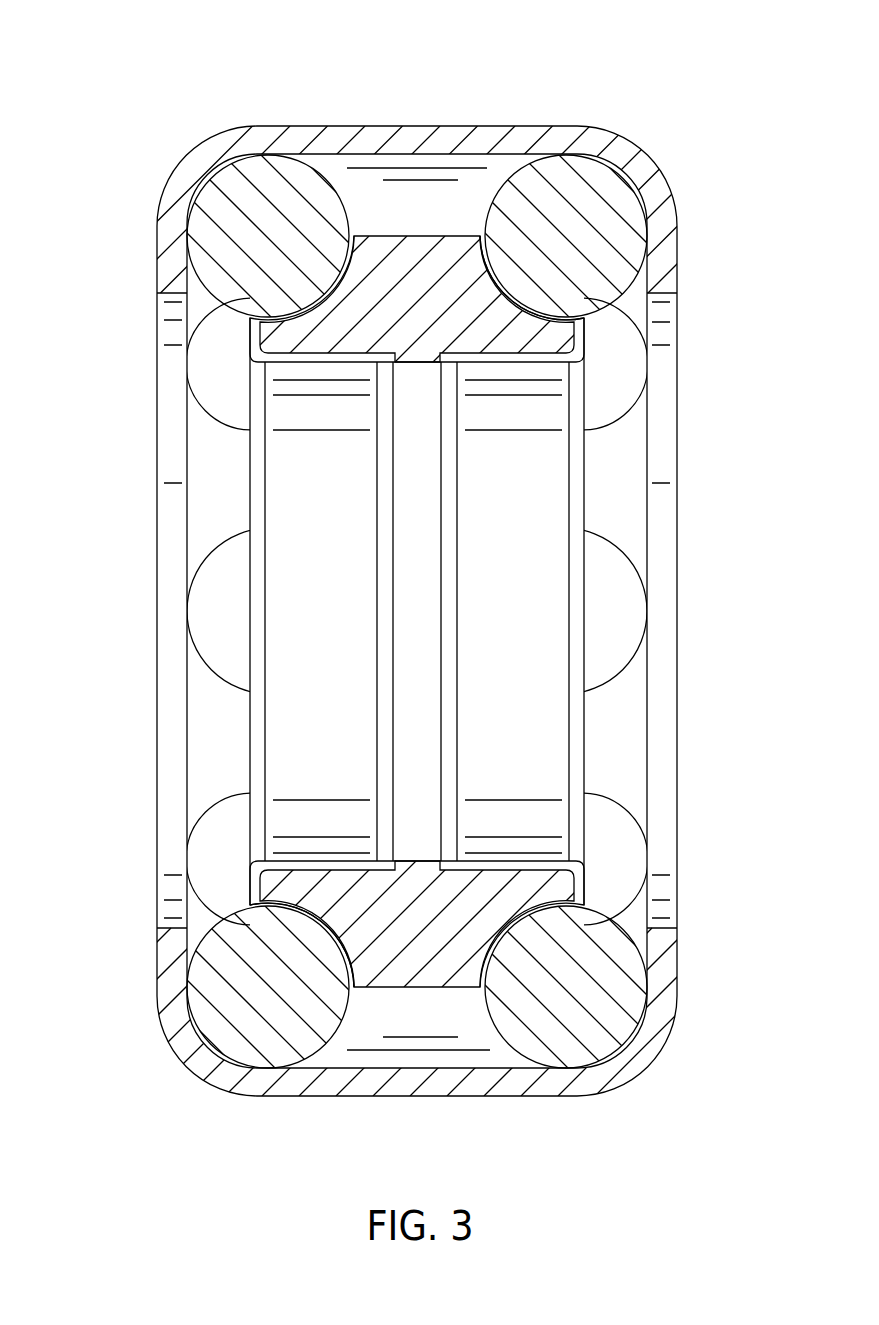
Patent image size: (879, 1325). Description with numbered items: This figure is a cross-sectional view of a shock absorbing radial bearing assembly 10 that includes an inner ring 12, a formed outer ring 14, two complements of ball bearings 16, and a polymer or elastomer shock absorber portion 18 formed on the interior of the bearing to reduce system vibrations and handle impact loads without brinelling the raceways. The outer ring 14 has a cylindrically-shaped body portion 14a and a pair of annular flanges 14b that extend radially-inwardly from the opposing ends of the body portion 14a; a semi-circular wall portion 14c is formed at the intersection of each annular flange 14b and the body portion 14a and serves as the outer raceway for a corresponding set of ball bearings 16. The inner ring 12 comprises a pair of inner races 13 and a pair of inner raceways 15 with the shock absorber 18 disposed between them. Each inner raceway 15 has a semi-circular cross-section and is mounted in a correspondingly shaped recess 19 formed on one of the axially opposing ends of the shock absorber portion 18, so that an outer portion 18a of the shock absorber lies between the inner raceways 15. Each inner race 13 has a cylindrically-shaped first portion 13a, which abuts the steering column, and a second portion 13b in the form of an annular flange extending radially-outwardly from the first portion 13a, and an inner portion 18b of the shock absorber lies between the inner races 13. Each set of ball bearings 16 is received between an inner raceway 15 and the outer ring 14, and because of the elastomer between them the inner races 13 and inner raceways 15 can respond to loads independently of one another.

The shock absorbing radial bearing assembly 10 is at (426, 584).
The inner ring 12 is at (240, 612).
The inner race 13 is at (385, 378).
The first portion 13a is at (584, 880).
The second portion 13b is at (255, 905).
The outer ring 14 is at (698, 227).
The body portion 14a is at (420, 128).
The annular flange 14b is at (678, 973).
The semi-circular wall portion 14c is at (615, 1040).
The inner raceway 15 is at (577, 347).
The ball bearings 16 is at (623, 250).
The shock absorber portion 18 is at (411, 700).
The outer portion 18a is at (380, 277).
The inner portion 18b is at (417, 890).
The recess 19 is at (200, 192).